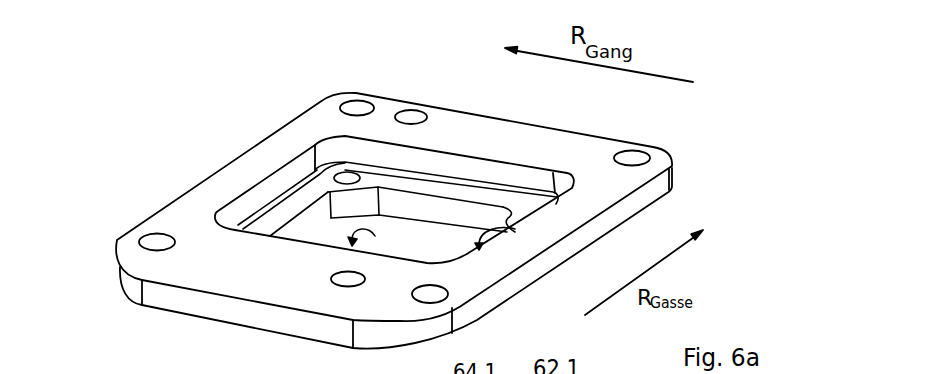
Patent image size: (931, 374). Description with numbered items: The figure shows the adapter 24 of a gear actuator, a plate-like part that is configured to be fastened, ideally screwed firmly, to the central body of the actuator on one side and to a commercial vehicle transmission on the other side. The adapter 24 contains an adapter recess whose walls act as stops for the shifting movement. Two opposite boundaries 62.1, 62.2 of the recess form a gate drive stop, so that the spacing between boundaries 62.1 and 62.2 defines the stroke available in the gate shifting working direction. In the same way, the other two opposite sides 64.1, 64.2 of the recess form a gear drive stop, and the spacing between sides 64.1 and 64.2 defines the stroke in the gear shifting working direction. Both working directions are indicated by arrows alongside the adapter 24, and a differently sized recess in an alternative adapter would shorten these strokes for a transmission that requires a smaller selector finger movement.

The adapter 24 is at (223, 177).
The first boundary of the gear drive stop 64.1 is at (315, 216).
The second boundary of the gear drive stop 64.2 is at (473, 233).
The first boundary of the gate drive stop 62.1 is at (443, 207).
The second boundary of the gate drive stop 62.2 is at (345, 233).